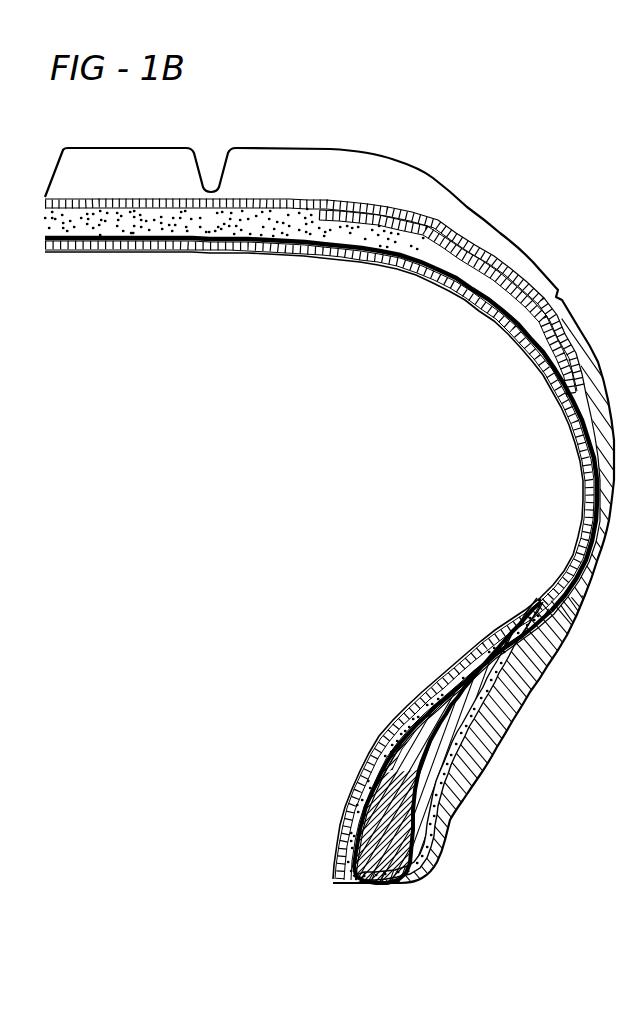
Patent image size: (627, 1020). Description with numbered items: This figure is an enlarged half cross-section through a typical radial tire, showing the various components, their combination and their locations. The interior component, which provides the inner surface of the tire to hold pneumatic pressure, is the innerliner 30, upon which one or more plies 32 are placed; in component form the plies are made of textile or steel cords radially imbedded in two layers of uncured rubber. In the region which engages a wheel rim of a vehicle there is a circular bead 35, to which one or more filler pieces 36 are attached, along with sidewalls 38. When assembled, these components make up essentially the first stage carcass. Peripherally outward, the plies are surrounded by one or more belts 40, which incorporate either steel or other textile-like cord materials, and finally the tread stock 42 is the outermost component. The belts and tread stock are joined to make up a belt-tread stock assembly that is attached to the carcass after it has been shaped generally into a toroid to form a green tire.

The innerliner 30 is at (273, 252).
The plies 32 is at (462, 300).
The bead 35 is at (375, 842).
The filler pieces 36 is at (408, 716).
The sidewalls 38 is at (545, 597).
The belts 40 is at (148, 226).
The tread stock 42 is at (412, 190).